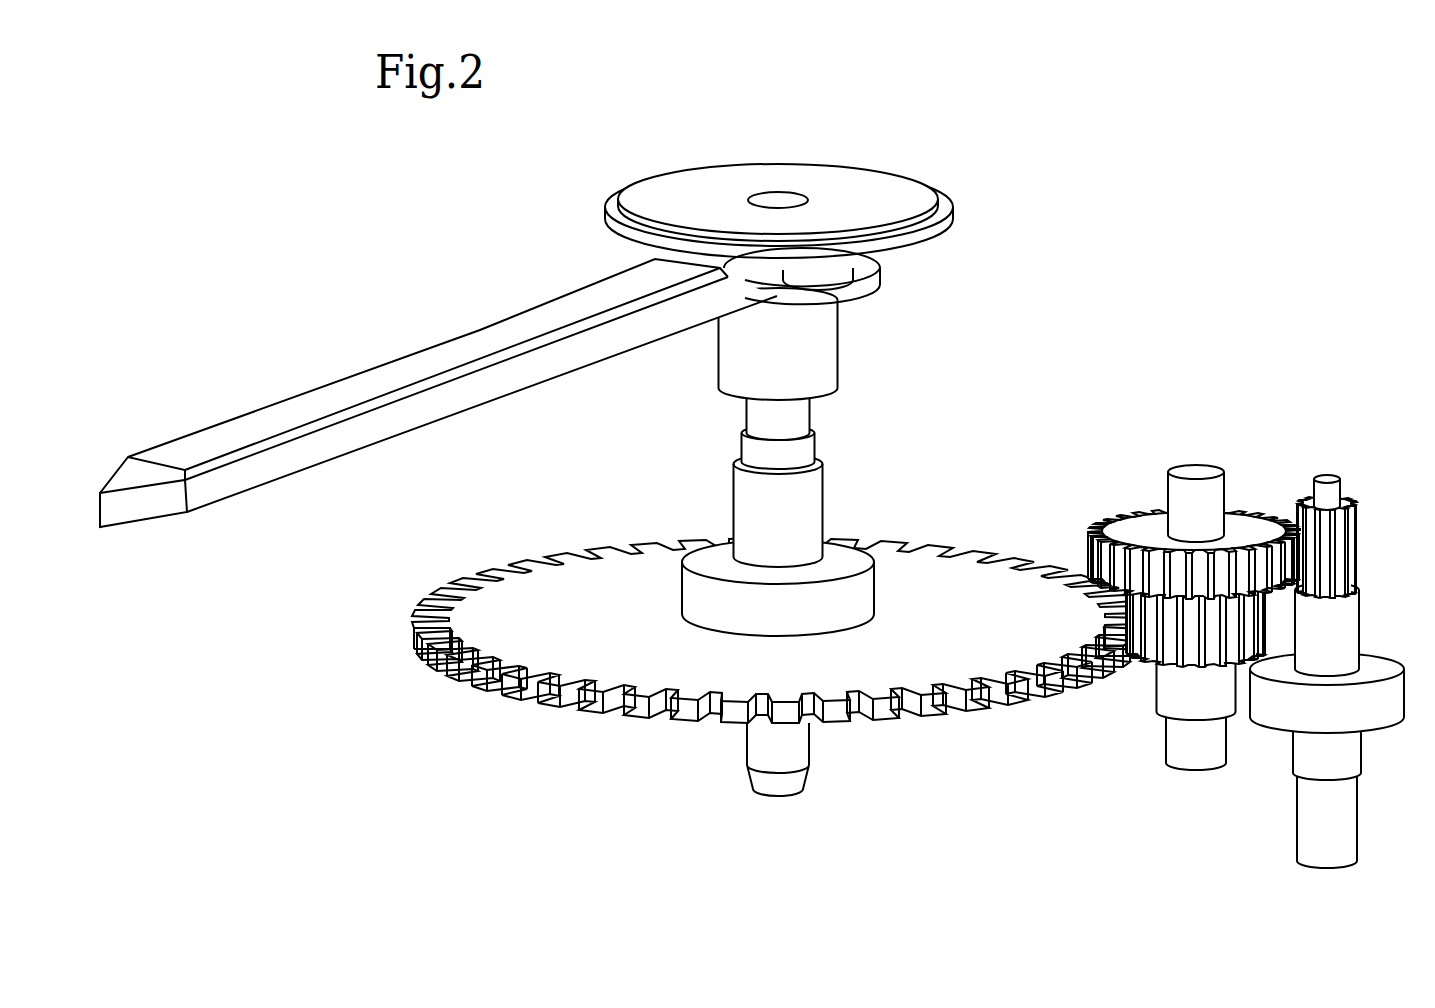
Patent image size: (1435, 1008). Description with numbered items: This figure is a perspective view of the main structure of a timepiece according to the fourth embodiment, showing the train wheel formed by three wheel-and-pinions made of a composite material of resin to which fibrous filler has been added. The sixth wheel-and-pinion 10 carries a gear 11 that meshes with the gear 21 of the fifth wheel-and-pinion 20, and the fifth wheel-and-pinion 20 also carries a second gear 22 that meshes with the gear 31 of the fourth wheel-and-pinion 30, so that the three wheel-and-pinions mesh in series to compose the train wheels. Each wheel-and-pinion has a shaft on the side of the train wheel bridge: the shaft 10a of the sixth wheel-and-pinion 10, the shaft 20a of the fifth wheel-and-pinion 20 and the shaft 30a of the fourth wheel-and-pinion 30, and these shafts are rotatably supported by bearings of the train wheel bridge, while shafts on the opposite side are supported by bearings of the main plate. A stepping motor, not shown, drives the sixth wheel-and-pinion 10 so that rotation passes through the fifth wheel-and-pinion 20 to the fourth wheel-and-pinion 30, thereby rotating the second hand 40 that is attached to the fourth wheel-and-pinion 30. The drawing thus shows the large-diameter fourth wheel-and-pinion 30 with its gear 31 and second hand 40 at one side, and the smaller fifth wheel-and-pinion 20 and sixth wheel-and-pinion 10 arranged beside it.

The sixth wheel-and-pinion 10 is at (1308, 634).
The shaft 10a is at (1305, 822).
The gear 11 is at (1353, 550).
The fifth wheel-and-pinion 20 is at (1167, 613).
The shaft 20a is at (1197, 752).
The gear 21 is at (1087, 555).
The gear 22 is at (1160, 642).
The fourth wheel-and-pinion 30 is at (777, 502).
The shaft 30a is at (760, 778).
The gear 31 is at (535, 690).
The second hand 40 is at (452, 298).